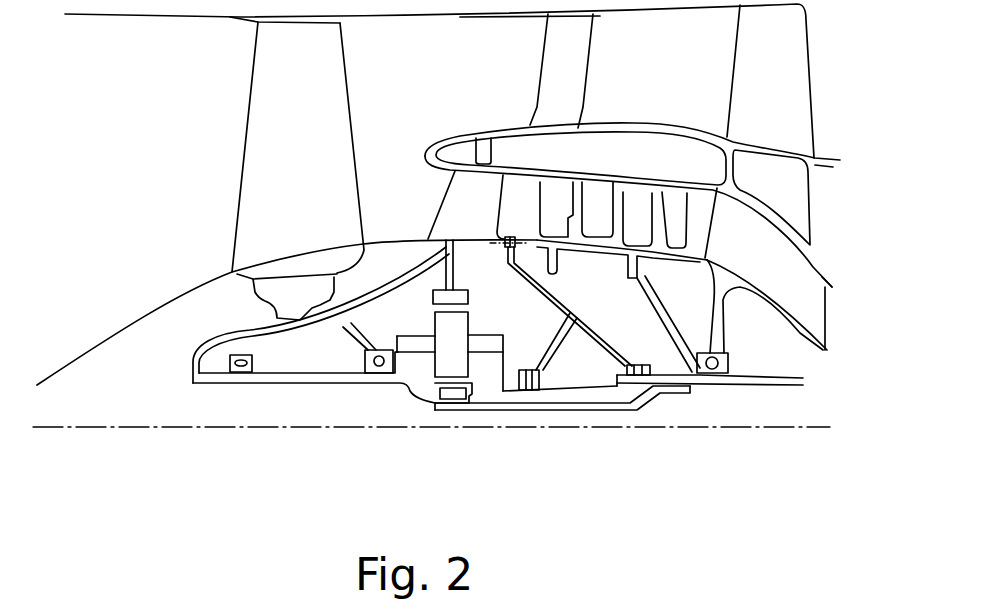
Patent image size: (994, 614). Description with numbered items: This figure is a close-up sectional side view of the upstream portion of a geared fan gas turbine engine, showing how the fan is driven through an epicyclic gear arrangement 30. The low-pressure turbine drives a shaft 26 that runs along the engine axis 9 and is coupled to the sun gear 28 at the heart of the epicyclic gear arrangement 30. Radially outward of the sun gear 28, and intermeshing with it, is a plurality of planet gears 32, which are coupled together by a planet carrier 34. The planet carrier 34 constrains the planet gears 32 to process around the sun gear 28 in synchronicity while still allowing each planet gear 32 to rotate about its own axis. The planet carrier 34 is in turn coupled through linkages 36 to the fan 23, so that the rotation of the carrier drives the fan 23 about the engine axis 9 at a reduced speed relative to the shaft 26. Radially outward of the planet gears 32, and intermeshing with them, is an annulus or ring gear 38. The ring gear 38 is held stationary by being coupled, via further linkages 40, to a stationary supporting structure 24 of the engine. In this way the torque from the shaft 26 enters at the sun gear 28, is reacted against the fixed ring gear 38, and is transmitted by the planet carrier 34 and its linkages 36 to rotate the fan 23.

The engine axis 9 is at (227, 428).
The fan 23 is at (263, 148).
The stationary supporting structure 24 is at (460, 200).
The shaft 26 is at (603, 393).
The sun gear 28 is at (453, 393).
The epicyclic gear arrangement 30 is at (413, 400).
The planet gears 32 is at (440, 363).
The planet carrier 34 is at (493, 378).
The linkages 36 is at (410, 367).
The ring gear 38 is at (433, 292).
The linkages 40 is at (455, 275).